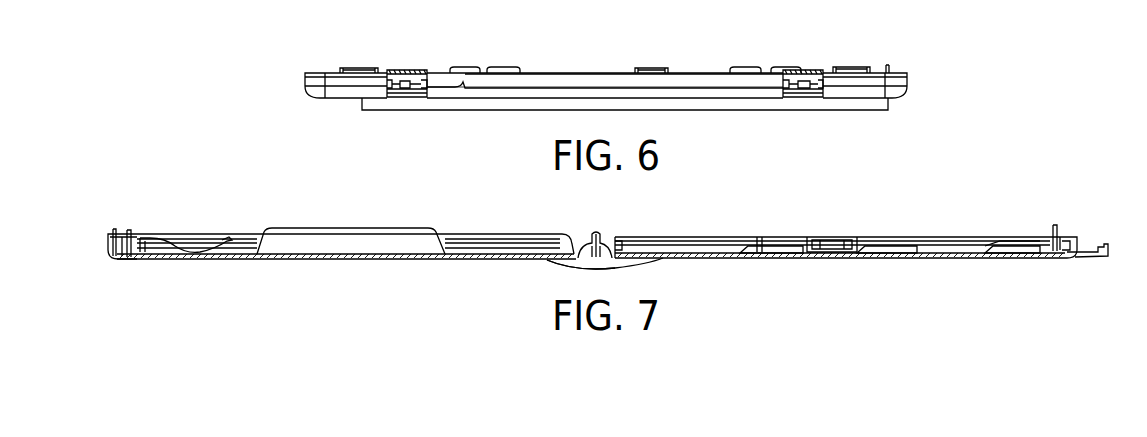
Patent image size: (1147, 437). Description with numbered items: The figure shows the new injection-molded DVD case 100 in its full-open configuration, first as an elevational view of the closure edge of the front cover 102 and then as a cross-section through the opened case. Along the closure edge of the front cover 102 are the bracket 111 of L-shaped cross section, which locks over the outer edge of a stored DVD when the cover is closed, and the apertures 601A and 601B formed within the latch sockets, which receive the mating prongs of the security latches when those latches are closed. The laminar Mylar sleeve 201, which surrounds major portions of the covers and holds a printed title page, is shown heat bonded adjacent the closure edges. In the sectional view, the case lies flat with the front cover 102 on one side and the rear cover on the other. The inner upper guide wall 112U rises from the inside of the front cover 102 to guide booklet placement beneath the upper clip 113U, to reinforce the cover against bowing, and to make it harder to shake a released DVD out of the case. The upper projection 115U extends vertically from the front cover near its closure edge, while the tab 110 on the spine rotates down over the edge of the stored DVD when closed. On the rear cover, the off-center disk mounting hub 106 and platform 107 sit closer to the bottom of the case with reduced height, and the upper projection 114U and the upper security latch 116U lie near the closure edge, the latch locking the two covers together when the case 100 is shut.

In FIG. 6, the injection-molded DVD case 100 is at (317, 54).
In FIG. 7, the injection-molded DVD case 100 is at (172, 210).
In FIG. 6, the front cover 102 is at (575, 82).
In FIG. 6, the bracket 111 is at (655, 67).
In FIG. 6, the aperture 601A is at (388, 98).
In FIG. 6, the aperture 601B is at (405, 80).
In FIG. 6, the laminar Mylar sleeve 201 is at (550, 100).
In FIG. 7, the laminar Mylar sleeve 201 is at (564, 270).
In FIG. 7, the upper clip 113U is at (152, 238).
In FIG. 7, the upper projection 115U is at (128, 260).
In FIG. 7, the inner upper guide wall 112U is at (343, 242).
In FIG. 7, the tab 110 is at (597, 232).
In FIG. 7, the disk mounting hub 106 is at (845, 253).
In FIG. 7, the disk mounting platform 107 is at (1005, 246).
In FIG. 7, the upper projection 114U is at (1055, 228).
In FIG. 7, the upper security latch 116U is at (1090, 252).